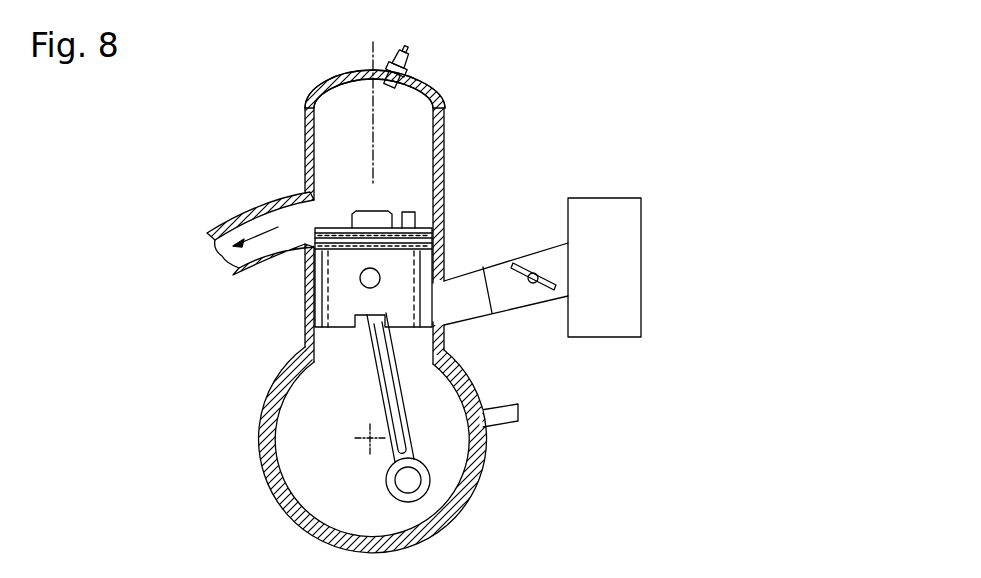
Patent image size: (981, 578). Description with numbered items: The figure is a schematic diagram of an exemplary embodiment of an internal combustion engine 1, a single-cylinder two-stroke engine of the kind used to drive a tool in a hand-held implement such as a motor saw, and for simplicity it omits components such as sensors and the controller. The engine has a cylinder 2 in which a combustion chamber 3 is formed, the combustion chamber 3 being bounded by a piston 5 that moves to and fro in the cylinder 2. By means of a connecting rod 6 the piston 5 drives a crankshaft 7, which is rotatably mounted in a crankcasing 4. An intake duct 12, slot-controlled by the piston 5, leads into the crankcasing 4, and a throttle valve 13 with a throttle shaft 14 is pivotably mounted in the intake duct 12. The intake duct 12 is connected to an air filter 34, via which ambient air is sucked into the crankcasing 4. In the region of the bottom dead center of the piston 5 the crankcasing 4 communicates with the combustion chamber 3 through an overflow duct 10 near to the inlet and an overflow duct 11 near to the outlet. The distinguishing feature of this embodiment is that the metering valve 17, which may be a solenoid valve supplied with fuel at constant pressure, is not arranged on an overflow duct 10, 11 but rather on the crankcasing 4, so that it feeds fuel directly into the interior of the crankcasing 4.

The internal combustion engine 1 is at (580, 101).
The cylinder 2 is at (307, 132).
The combustion chamber 3 is at (418, 132).
The crankcasing 4 is at (463, 483).
The piston 5 is at (337, 305).
The connecting rod 6 is at (405, 410).
The crankshaft 7 is at (365, 442).
The overflow duct near to the inlet 10 is at (415, 218).
The overflow duct near to the outlet 11 is at (352, 213).
The intake duct 12 is at (463, 288).
The throttle valve 13 is at (517, 263).
The throttle shaft 14 is at (533, 284).
The metering valve 17 is at (493, 410).
The air filter 34 is at (632, 275).